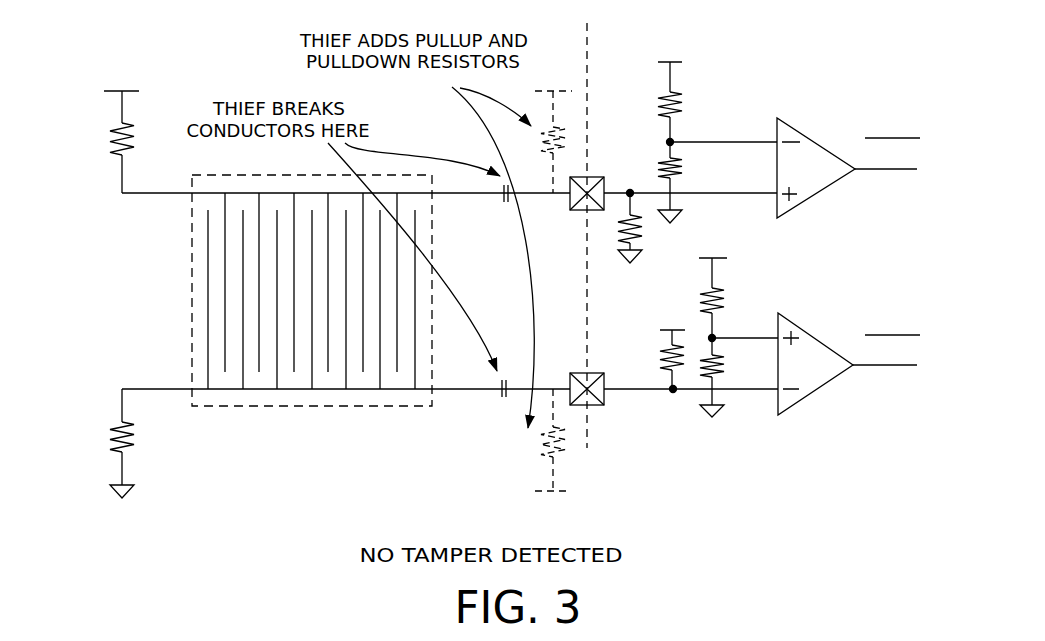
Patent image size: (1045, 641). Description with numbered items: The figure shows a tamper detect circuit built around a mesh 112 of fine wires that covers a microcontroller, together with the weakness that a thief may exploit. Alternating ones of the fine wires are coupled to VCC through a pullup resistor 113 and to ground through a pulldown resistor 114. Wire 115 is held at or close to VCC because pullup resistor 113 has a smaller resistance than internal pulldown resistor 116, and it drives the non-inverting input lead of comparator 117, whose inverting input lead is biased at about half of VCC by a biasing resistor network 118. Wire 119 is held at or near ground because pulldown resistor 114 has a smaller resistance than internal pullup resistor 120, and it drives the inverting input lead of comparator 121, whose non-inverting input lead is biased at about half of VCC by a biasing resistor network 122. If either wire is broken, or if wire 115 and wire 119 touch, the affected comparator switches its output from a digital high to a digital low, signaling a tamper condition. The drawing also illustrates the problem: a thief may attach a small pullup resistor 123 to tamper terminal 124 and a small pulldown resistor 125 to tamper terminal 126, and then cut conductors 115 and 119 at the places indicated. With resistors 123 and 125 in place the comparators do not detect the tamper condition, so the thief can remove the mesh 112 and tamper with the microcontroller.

The mesh 112 is at (300, 407).
The pullup resistor 113 is at (108, 142).
The pulldown resistor 114 is at (108, 437).
The wire 115 is at (461, 195).
The internal pulldown resistor 116 is at (645, 228).
The comparator 117 is at (810, 138).
The biasing resistor network 118 is at (652, 167).
The wire 119 is at (452, 393).
The internal pullup resistor 120 is at (661, 347).
The comparator 121 is at (813, 337).
The biasing resistor network 122 is at (730, 363).
The pullup resistor 123 is at (541, 127).
The tamper terminal 124 is at (572, 212).
The pulldown resistor 125 is at (539, 460).
The tamper terminal 126 is at (606, 392).